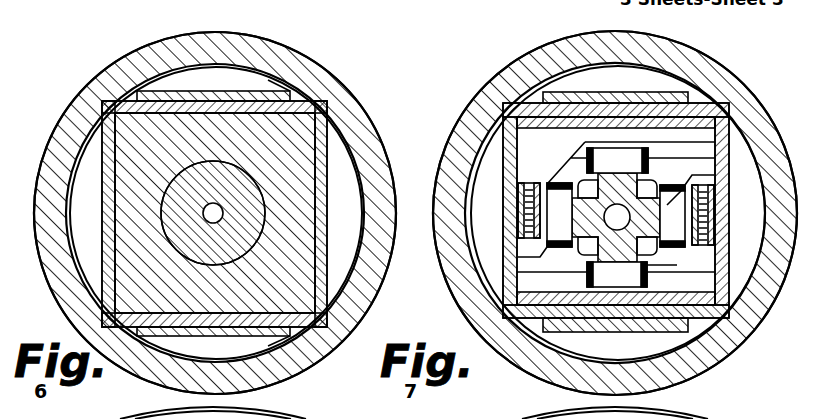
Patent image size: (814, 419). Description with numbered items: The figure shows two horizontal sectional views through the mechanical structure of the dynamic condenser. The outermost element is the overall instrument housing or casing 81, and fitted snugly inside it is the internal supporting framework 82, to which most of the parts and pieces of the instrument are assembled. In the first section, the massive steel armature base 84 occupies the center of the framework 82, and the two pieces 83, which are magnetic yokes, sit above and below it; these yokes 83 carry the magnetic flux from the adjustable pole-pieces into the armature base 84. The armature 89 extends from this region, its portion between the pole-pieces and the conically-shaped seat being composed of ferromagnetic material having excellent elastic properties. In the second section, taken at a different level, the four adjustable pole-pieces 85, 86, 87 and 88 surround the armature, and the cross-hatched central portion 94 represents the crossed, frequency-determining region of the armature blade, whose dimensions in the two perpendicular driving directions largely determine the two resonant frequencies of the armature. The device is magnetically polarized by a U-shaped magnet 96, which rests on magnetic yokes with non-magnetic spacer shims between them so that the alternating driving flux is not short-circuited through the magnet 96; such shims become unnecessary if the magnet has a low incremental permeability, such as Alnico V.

In FIG. 6, the instrument housing 81 is at (318, 92).
In FIG. 7, the instrument housing 81 is at (712, 91).
In FIG. 6, the internal supporting framework 82 is at (352, 118).
In FIG. 7, the internal supporting framework 82 is at (748, 114).
In FIG. 6, the magnetic yokes 83 is at (237, 88).
In FIG. 7, the magnetic yokes 83 is at (632, 92).
In FIG. 6, the armature base 84 is at (300, 228).
In FIG. 7, the adjustable pole-piece 85 is at (690, 172).
In FIG. 7, the adjustable pole-piece 86 is at (700, 366).
In FIG. 7, the adjustable pole-piece 87 is at (535, 260).
In FIG. 7, the adjustable pole-piece 88 is at (603, 163).
In FIG. 6, the armature 89 is at (93, 91).
In FIG. 7, the cross-hatched central portion 94 is at (628, 247).
In FIG. 7, the U-shaped magnet 96 is at (524, 140).